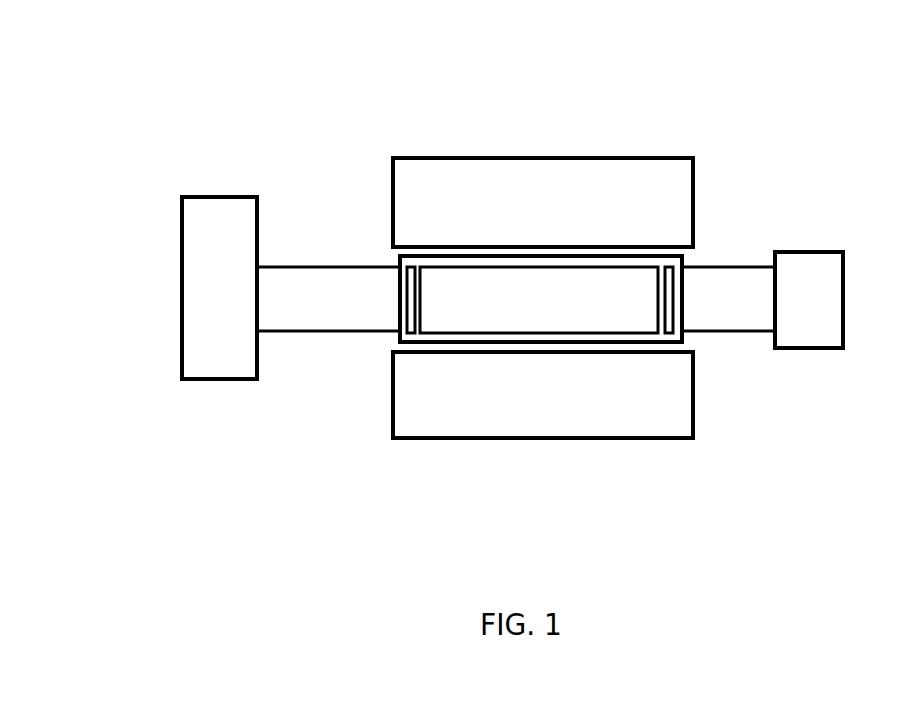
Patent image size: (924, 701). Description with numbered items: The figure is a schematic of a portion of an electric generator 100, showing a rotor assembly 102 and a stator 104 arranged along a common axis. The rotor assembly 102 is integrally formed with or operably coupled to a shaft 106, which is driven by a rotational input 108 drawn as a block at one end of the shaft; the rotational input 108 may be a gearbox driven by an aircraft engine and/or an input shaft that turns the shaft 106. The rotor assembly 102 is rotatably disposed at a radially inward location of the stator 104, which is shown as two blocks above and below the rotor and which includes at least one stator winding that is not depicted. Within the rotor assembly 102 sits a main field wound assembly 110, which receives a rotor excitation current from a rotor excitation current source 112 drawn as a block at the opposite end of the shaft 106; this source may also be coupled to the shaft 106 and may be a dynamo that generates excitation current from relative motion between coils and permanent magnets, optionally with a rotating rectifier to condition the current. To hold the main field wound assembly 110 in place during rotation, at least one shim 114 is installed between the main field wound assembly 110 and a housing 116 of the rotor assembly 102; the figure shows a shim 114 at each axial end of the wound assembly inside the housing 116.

The electric generator 100 is at (441, 75).
The rotor assembly 102 is at (550, 292).
The stator 104 is at (567, 220).
The shaft 106 is at (298, 332).
The rotational input 108 is at (218, 382).
The main field wound assembly 110 is at (565, 316).
The rotor excitation current source 112 is at (817, 250).
The shim 114 is at (399, 343).
The housing 116 is at (683, 257).